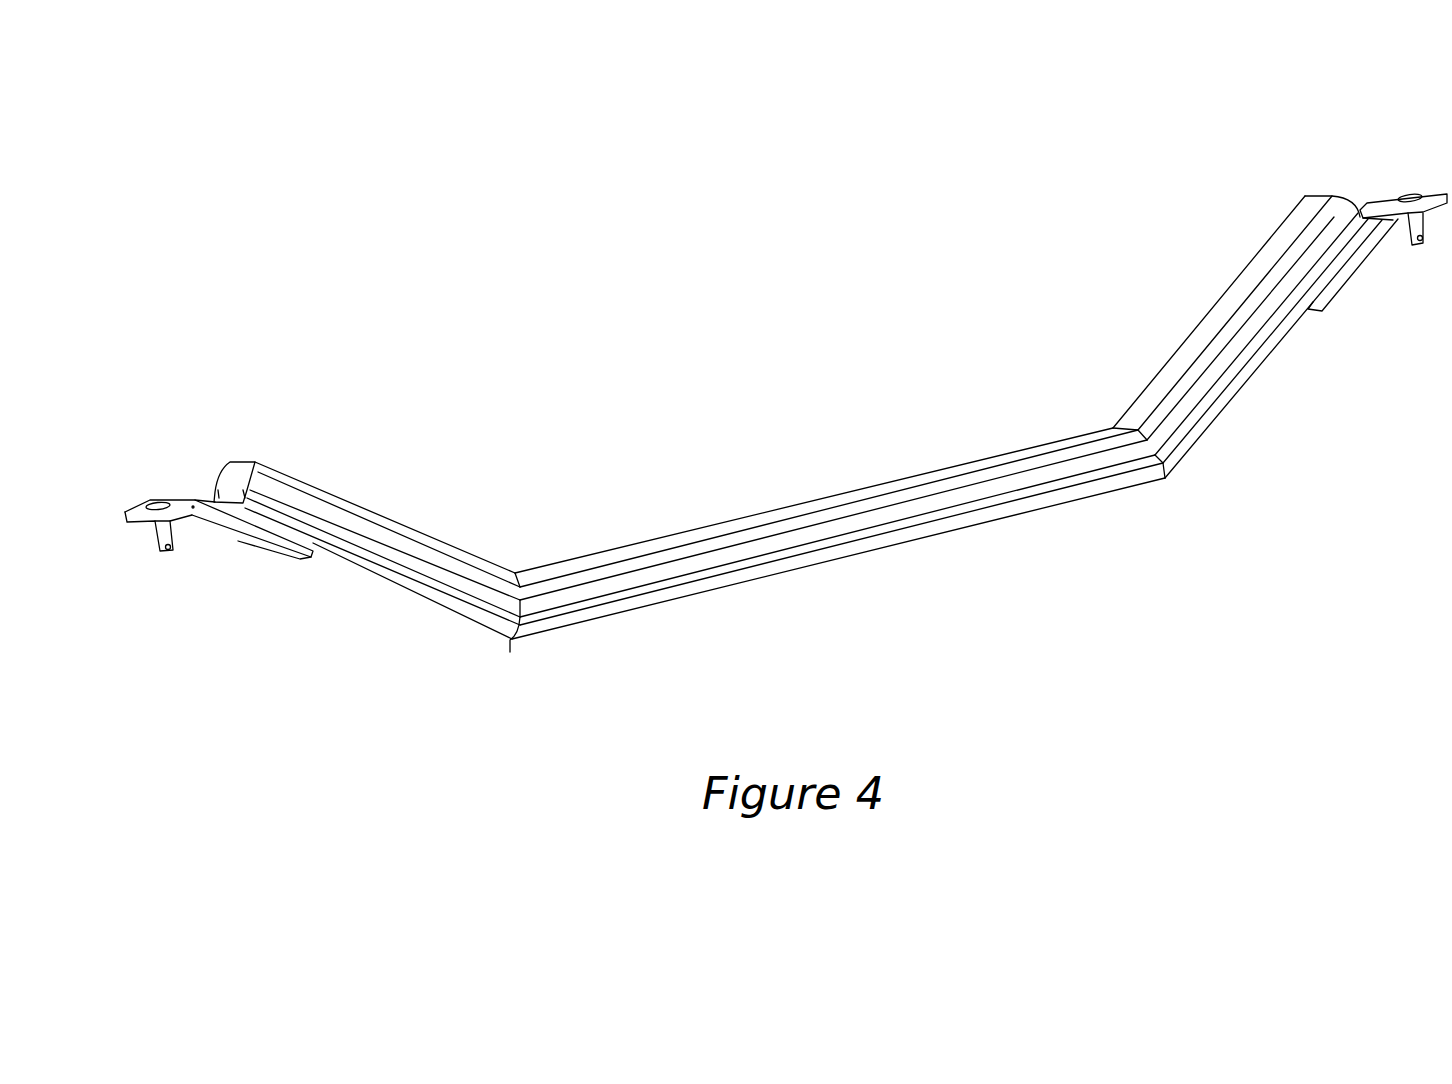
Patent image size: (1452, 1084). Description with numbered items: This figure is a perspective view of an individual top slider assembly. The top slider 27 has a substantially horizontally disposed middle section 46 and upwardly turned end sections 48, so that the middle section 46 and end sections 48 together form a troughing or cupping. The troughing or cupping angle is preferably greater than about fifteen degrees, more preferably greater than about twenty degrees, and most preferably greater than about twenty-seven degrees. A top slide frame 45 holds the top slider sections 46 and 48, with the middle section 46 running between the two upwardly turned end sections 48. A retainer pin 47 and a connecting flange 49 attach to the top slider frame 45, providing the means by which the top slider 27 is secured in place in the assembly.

The top slider 27 is at (1057, 137).
The top slide frame 45 is at (510, 652).
The horizontally disposed middle section 46 is at (802, 503).
The retainer pin 47 is at (160, 552).
The upwardly turned end sections 48 is at (385, 517).
The connecting flange 49 is at (227, 537).